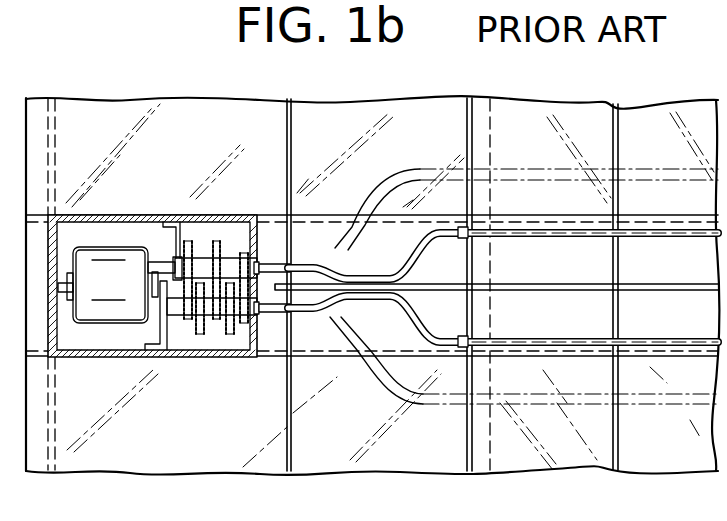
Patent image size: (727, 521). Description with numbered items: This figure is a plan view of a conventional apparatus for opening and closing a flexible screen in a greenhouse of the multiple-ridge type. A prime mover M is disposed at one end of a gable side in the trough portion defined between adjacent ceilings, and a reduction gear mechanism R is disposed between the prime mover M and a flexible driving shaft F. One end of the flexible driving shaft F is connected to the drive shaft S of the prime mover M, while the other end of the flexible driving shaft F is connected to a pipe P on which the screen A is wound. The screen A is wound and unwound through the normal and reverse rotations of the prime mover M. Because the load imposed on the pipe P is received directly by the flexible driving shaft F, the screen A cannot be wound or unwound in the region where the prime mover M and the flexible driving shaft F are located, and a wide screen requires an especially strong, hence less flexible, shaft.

The screen A is at (514, 113).
The prime mover M is at (114, 253).
The reduction gear mechanism R is at (226, 239).
The drive shaft S is at (261, 252).
The flexible driving shaft F is at (323, 264).
The pipe P is at (465, 227).